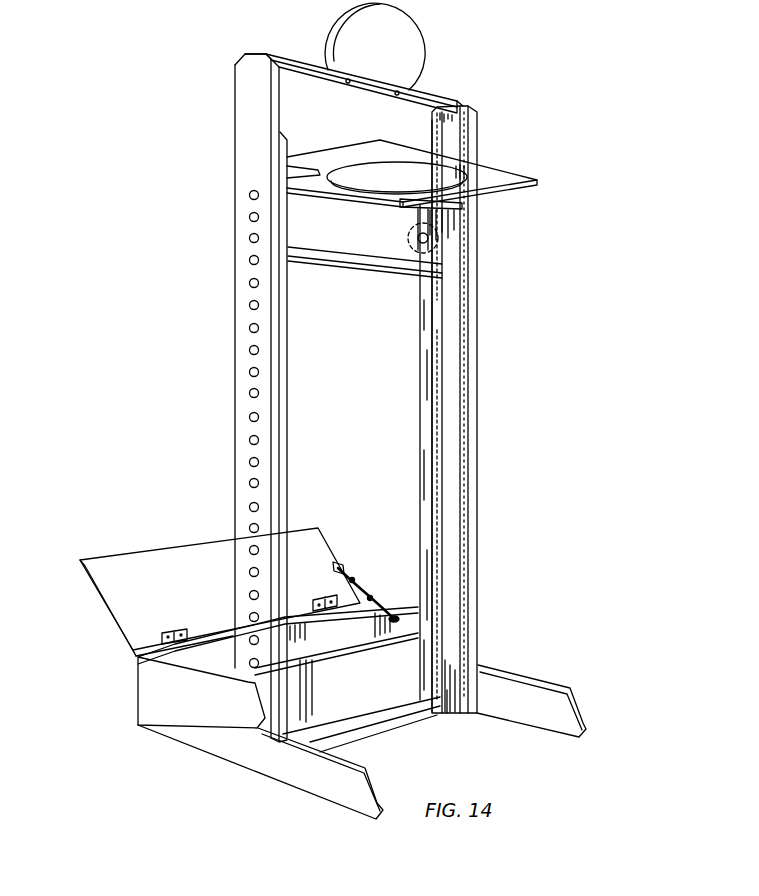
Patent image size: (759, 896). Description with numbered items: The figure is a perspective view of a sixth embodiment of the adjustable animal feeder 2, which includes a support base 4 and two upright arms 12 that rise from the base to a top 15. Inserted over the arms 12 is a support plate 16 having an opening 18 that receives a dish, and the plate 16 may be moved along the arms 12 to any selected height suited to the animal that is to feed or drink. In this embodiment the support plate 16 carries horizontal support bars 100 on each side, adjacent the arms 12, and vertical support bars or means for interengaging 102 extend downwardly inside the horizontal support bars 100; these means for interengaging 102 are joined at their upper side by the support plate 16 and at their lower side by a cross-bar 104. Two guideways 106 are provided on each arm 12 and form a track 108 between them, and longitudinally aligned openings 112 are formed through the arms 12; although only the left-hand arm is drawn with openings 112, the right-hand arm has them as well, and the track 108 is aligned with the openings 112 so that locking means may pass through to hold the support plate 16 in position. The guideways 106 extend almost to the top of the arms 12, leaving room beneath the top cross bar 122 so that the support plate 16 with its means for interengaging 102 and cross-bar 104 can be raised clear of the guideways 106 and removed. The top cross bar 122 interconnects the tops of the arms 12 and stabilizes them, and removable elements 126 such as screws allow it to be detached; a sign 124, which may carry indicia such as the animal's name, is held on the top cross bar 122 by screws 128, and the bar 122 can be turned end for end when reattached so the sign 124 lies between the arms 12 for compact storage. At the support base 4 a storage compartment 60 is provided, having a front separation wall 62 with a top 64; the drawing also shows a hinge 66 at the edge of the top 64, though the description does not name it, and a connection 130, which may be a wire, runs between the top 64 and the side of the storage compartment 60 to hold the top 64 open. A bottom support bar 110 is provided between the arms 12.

The adjustable animal feeder 2 is at (543, 376).
The support base 4 is at (227, 789).
The arms 12 is at (248, 132).
The top of the arms 15 is at (250, 44).
The support plate 16 is at (492, 183).
The opening 18 is at (403, 175).
The storage compartment 60 is at (220, 655).
The front separation wall 62 is at (378, 700).
The top 64 is at (143, 558).
The hinge 66 is at (180, 632).
The horizontal support bars 100 is at (420, 208).
The means for interengaging 102 is at (438, 260).
The cross-bar 104 is at (400, 260).
The guideways 106 is at (450, 478).
The track 108 is at (437, 378).
The bottom support bar 110 is at (352, 740).
The openings 112 is at (249, 306).
The top cross bar 122 is at (443, 97).
The sign 124 is at (403, 58).
The removable elements 126 is at (266, 53).
The screws 128 is at (397, 95).
The connection 130 is at (365, 592).